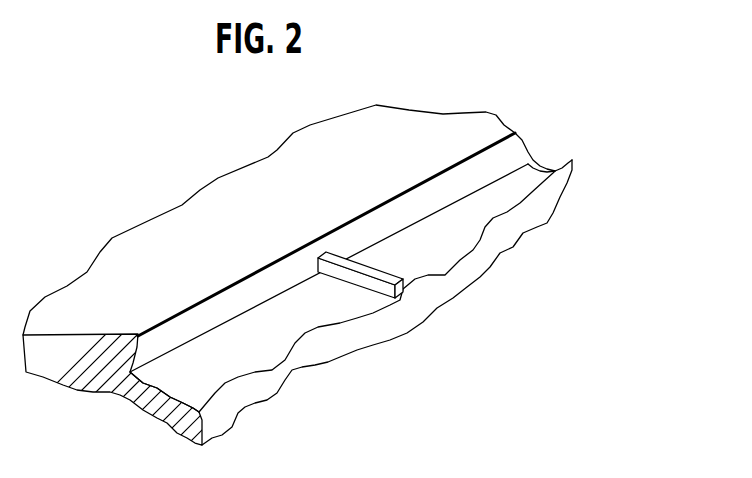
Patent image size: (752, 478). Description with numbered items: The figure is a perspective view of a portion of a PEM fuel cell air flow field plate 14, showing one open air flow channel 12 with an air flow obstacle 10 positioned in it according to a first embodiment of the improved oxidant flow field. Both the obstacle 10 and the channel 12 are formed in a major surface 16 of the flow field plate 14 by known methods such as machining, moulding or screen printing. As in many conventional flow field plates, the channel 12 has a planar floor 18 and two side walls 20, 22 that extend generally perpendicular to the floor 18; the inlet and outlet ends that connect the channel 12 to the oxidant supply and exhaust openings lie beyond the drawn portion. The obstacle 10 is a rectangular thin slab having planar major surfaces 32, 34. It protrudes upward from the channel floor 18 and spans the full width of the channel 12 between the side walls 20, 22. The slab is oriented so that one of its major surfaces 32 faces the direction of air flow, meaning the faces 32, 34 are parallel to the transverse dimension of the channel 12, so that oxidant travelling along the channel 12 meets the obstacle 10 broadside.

The air flow obstacle 10 is at (432, 314).
The air flow channel 12 is at (253, 360).
The air flow field plate 14 is at (220, 173).
The major surface 16 is at (459, 125).
The floor 18 is at (533, 173).
The side wall 20 is at (509, 153).
The side wall 22 is at (547, 198).
The major surface of obstacle 32 is at (387, 290).
The major surface of obstacle 34 is at (445, 275).